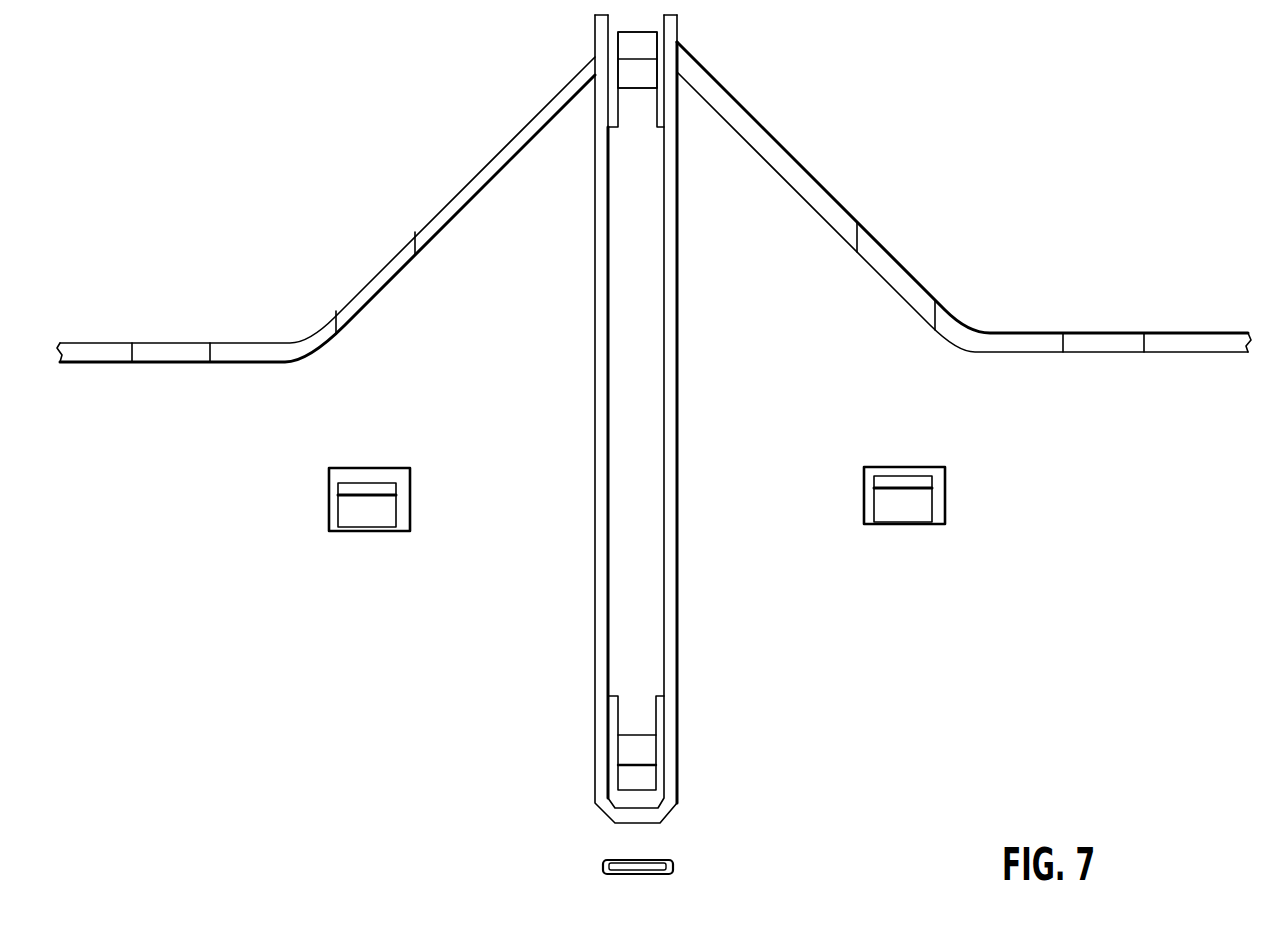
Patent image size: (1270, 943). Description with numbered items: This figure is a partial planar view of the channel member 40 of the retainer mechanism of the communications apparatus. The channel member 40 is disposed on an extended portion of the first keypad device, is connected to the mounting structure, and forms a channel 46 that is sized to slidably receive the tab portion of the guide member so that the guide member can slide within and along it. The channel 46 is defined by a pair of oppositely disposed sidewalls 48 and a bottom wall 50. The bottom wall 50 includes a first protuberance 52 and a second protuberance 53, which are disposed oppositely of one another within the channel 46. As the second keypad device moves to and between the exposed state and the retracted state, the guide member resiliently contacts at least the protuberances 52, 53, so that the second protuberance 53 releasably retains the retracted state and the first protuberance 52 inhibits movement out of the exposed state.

The channel member 40 is at (678, 118).
The channel 46 is at (650, 182).
The sidewalls 48 is at (595, 270).
The bottom wall 50 is at (638, 309).
The first protuberance 52 is at (640, 762).
The second protuberance 53 is at (642, 70).